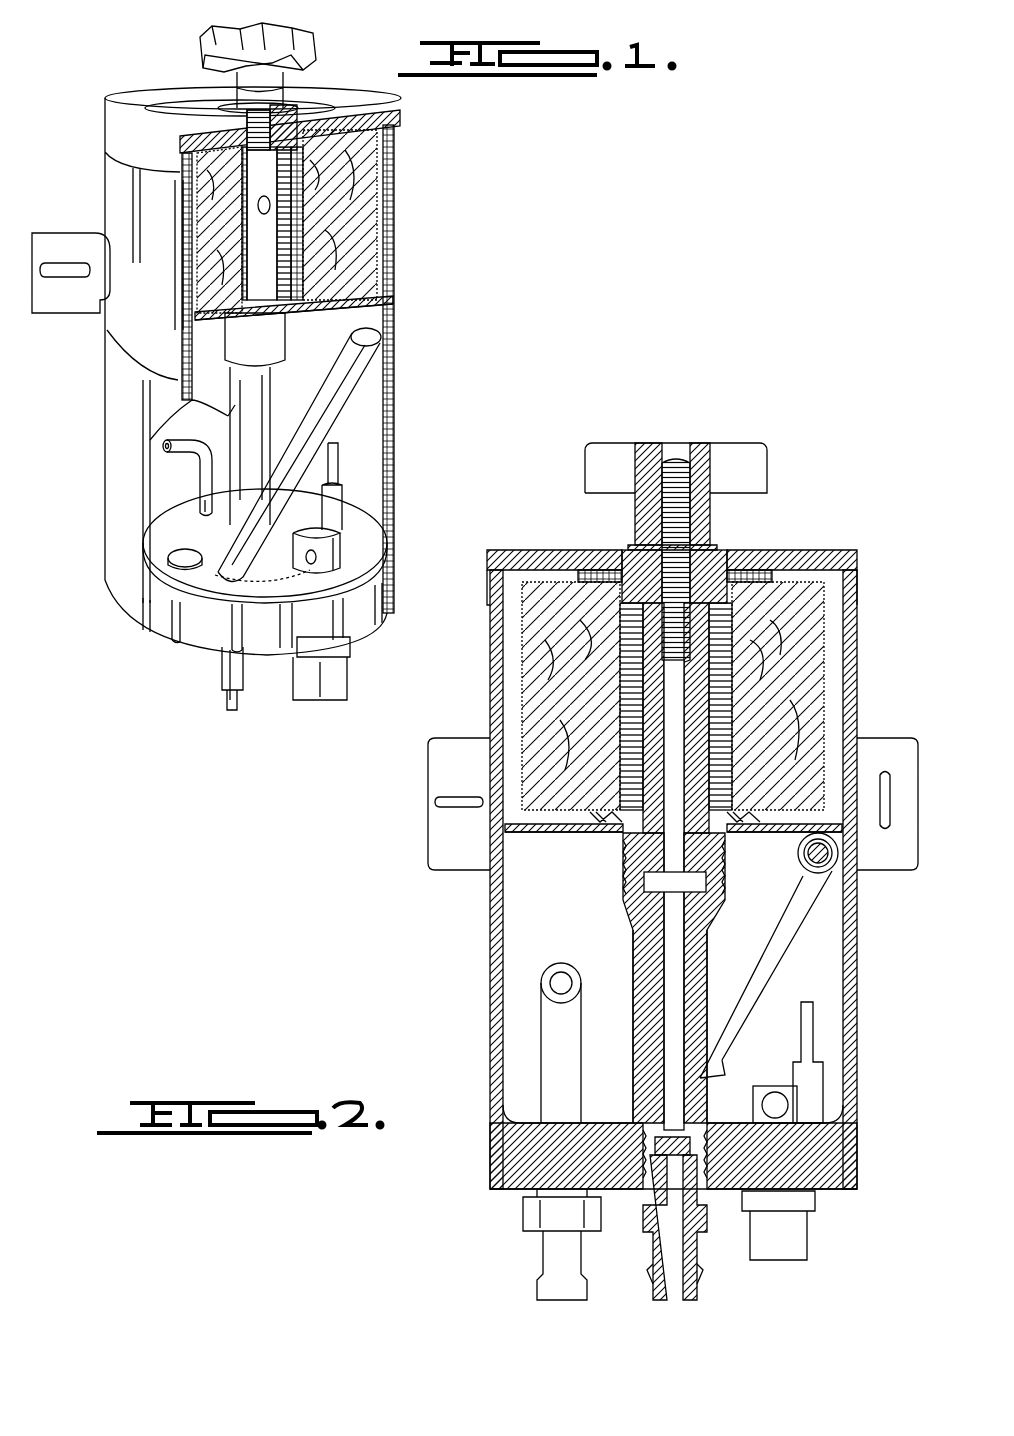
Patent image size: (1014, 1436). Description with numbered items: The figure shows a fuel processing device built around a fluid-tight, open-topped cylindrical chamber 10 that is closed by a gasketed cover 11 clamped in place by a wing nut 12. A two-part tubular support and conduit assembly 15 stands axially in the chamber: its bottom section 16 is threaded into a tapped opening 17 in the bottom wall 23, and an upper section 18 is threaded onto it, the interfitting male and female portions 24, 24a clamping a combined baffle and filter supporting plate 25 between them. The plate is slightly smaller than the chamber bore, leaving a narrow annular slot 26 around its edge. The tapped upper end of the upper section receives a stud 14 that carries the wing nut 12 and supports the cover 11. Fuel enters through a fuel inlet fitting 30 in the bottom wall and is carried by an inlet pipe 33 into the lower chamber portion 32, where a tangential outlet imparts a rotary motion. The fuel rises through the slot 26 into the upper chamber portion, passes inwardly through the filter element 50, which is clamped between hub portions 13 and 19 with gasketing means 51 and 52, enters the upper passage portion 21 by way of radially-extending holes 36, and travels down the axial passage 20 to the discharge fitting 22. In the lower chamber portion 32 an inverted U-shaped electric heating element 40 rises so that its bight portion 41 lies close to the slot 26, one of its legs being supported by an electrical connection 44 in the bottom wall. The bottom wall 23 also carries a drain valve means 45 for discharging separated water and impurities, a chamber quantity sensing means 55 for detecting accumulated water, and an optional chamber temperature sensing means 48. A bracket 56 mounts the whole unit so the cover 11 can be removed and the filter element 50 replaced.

In FIG. 1, the cylindrical enclosure or chamber 10 is at (398, 352).
In FIG. 1, the cover 11 is at (125, 102).
In FIG. 2, the cover 11 is at (548, 552).
In FIG. 1, the wing nut 12 is at (200, 45).
In FIG. 2, the wing nut 12 is at (598, 440).
In FIG. 2, the hub portion 13 is at (728, 560).
In FIG. 2, the stud 14 is at (680, 455).
In FIG. 2, the support and conduit assembly 15 is at (615, 878).
In FIG. 1, the bottom section 16 is at (245, 392).
In FIG. 2, the bottom section 16 is at (636, 947).
In FIG. 2, the tapped opening 17 is at (648, 1120).
In FIG. 1, the upper section 18 is at (276, 223).
In FIG. 2, the upper section 18 is at (720, 645).
In FIG. 2, the hub portion 19 is at (622, 800).
In FIG. 2, the axial passage 20 is at (680, 920).
In FIG. 2, the upper passage portion 21 is at (700, 748).
In FIG. 2, the fitting 22 is at (650, 1232).
In FIG. 2, the bottom wall 23 is at (505, 1150).
In FIG. 2, the male portion 24 is at (625, 855).
In FIG. 2, the female portion 24a is at (712, 870).
In FIG. 1, the combined baffle and filter supporting plate 25 is at (315, 305).
In FIG. 2, the combined baffle and filter supporting plate 25 is at (512, 840).
In FIG. 1, the annular slot 26 is at (370, 312).
In FIG. 2, the annular slot 26 is at (508, 828).
In FIG. 2, the fuel inlet fitting 30 is at (523, 1214).
In FIG. 1, the lower chamber portion 32 is at (370, 432).
In FIG. 2, the lower chamber portion 32 is at (505, 1003).
In FIG. 1, the inlet pipe 33 is at (170, 448).
In FIG. 2, the inlet pipe 33 is at (545, 1046).
In FIG. 1, the radially-extending holes 36 is at (269, 202).
In FIG. 2, the radially-extending holes 36 is at (688, 686).
In FIG. 1, the electric heating element 40 is at (360, 388).
In FIG. 2, the electric heating element 40 is at (806, 937).
In FIG. 1, the bight portion 41 is at (350, 336).
In FIG. 2, the bight portion 41 is at (832, 866).
In FIG. 1, the electrical connection 44 is at (220, 676).
In FIG. 1, the drain valve means 45 is at (355, 542).
In FIG. 2, the drain valve means 45 is at (776, 1076).
In FIG. 1, the chamber temperature sensing means 48 is at (195, 556).
In FIG. 1, the filter element 50 is at (378, 192).
In FIG. 2, the filter element 50 is at (714, 696).
In FIG. 2, the gasketing means 51 is at (598, 570).
In FIG. 2, the gasketing means 52 is at (605, 822).
In FIG. 1, the chamber quantity sensing means 55 is at (360, 498).
In FIG. 2, the chamber quantity sensing means 55 is at (835, 1069).
In FIG. 1, the bracket 56 is at (55, 232).